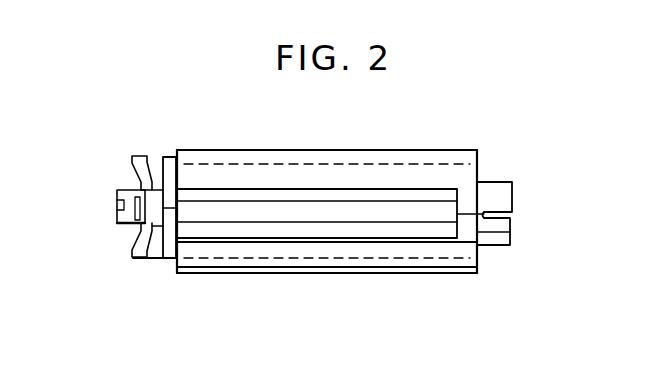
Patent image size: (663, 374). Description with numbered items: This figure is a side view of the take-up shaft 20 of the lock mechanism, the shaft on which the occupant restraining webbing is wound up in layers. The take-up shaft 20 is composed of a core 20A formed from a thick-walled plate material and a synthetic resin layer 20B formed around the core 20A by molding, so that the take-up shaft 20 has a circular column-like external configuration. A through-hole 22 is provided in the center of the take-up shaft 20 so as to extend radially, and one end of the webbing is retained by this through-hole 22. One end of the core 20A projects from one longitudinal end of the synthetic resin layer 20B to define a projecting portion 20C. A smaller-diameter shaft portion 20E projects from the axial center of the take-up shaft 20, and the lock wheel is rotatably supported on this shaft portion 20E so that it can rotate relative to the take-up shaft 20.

The take-up shaft 20 is at (378, 277).
The core 20A is at (403, 163).
The synthetic resin layer 20B is at (458, 274).
The projecting portion 20C is at (135, 260).
The smaller-diameter shaft portion 20E is at (117, 221).
The through-hole 22 is at (302, 216).